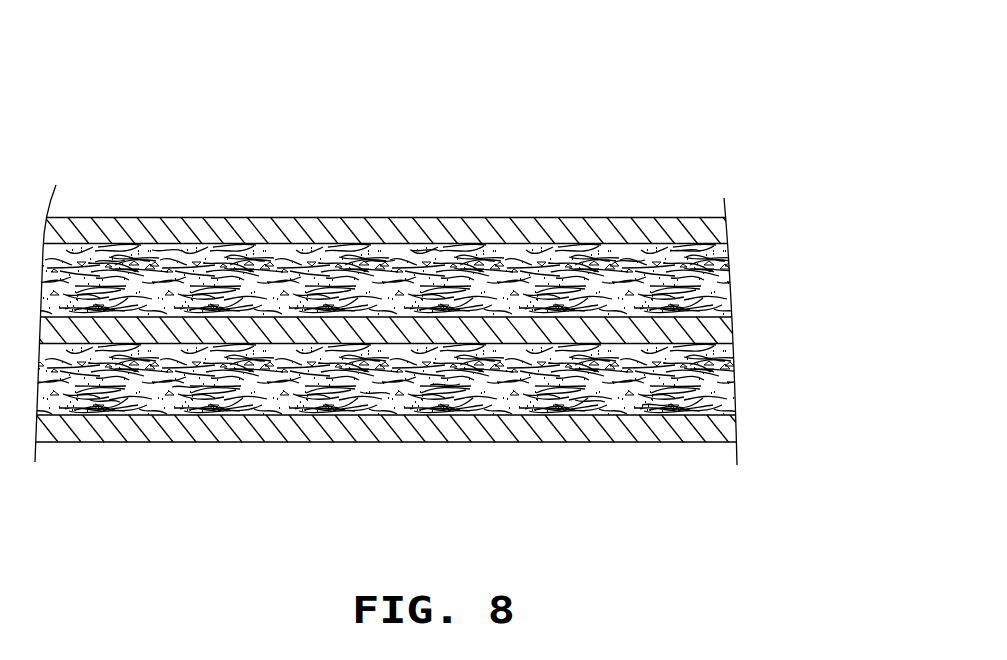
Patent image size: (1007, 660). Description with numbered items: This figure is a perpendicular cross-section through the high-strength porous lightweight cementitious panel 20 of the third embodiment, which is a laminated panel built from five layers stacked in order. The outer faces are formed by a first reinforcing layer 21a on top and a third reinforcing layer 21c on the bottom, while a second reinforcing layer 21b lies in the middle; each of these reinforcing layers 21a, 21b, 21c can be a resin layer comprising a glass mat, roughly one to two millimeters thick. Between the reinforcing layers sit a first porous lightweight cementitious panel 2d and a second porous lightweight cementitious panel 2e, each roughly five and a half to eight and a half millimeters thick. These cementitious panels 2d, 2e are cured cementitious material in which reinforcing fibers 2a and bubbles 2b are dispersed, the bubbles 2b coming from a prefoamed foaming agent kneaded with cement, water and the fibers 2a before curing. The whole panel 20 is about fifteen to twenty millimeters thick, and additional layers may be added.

The high-strength porous lightweight cementitious panel 20 is at (440, 262).
The first reinforcing layer 21a is at (726, 230).
The second reinforcing layer 21b is at (727, 330).
The third reinforcing layer 21c is at (727, 428).
The first porous lightweight cementitious panel 2d is at (733, 273).
The second porous lightweight cementitious panel 2e is at (735, 372).
The reinforcing fiber 2a is at (107, 262).
The bubble 2b is at (166, 250).